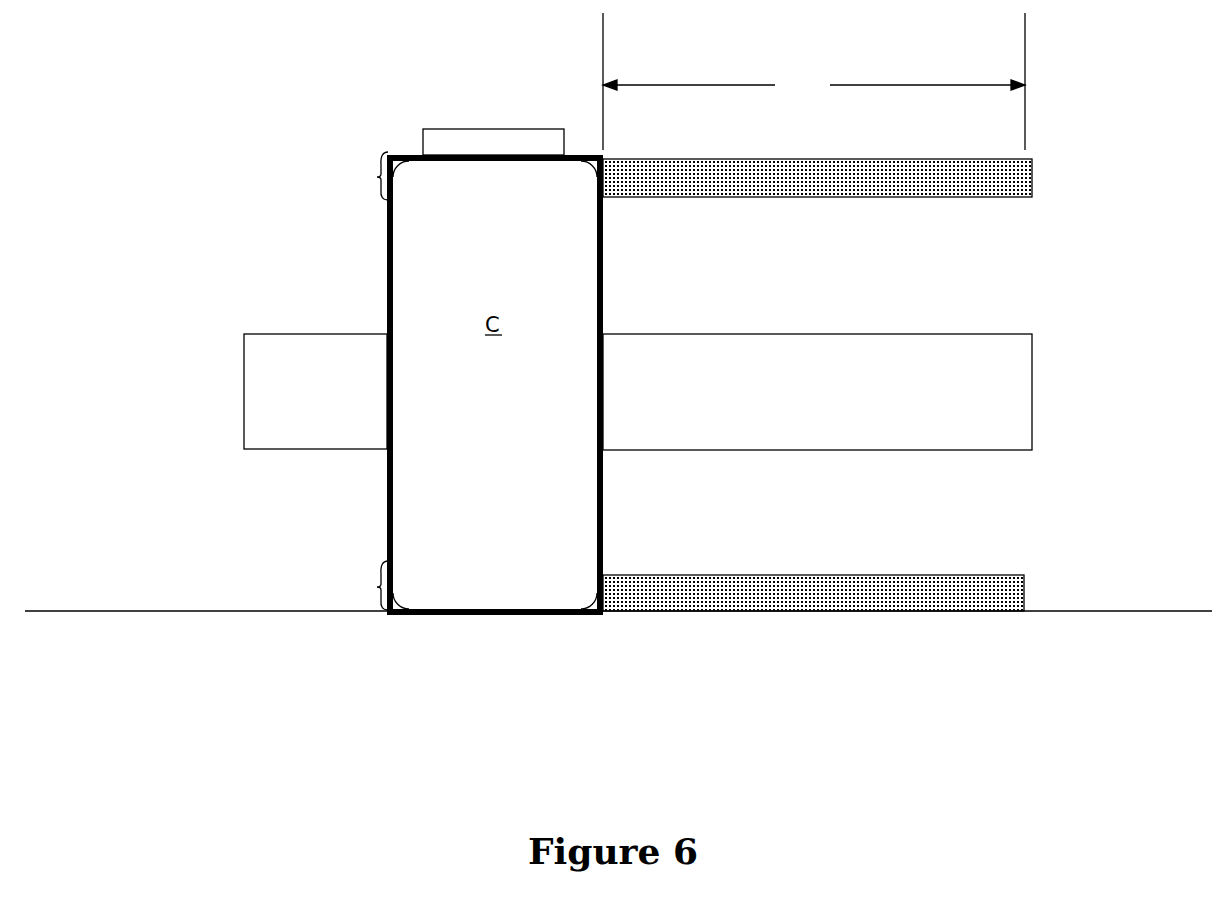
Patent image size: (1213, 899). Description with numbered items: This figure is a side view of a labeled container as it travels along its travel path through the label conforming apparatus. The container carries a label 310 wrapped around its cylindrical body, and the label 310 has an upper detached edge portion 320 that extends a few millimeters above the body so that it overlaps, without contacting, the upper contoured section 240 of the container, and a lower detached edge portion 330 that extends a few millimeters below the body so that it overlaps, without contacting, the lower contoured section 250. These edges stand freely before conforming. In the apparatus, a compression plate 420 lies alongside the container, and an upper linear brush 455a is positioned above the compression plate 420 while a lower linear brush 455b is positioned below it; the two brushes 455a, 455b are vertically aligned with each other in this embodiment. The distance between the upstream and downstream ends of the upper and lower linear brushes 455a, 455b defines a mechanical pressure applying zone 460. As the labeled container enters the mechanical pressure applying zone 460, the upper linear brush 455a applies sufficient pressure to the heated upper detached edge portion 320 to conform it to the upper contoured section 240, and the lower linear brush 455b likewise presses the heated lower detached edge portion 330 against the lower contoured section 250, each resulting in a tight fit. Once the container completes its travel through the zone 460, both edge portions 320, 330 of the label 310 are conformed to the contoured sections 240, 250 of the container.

The upper contoured section 240 is at (397, 165).
The lower contoured section 250 is at (395, 598).
The label 310 is at (386, 282).
The upper detached edge portion 320 is at (376, 176).
The lower detached edge portion 330 is at (376, 586).
The compression plate 420 is at (345, 395).
The upper linear brush 455a is at (817, 173).
The lower linear brush 455b is at (808, 587).
The mechanical pressure applying zone 460 is at (814, 81).